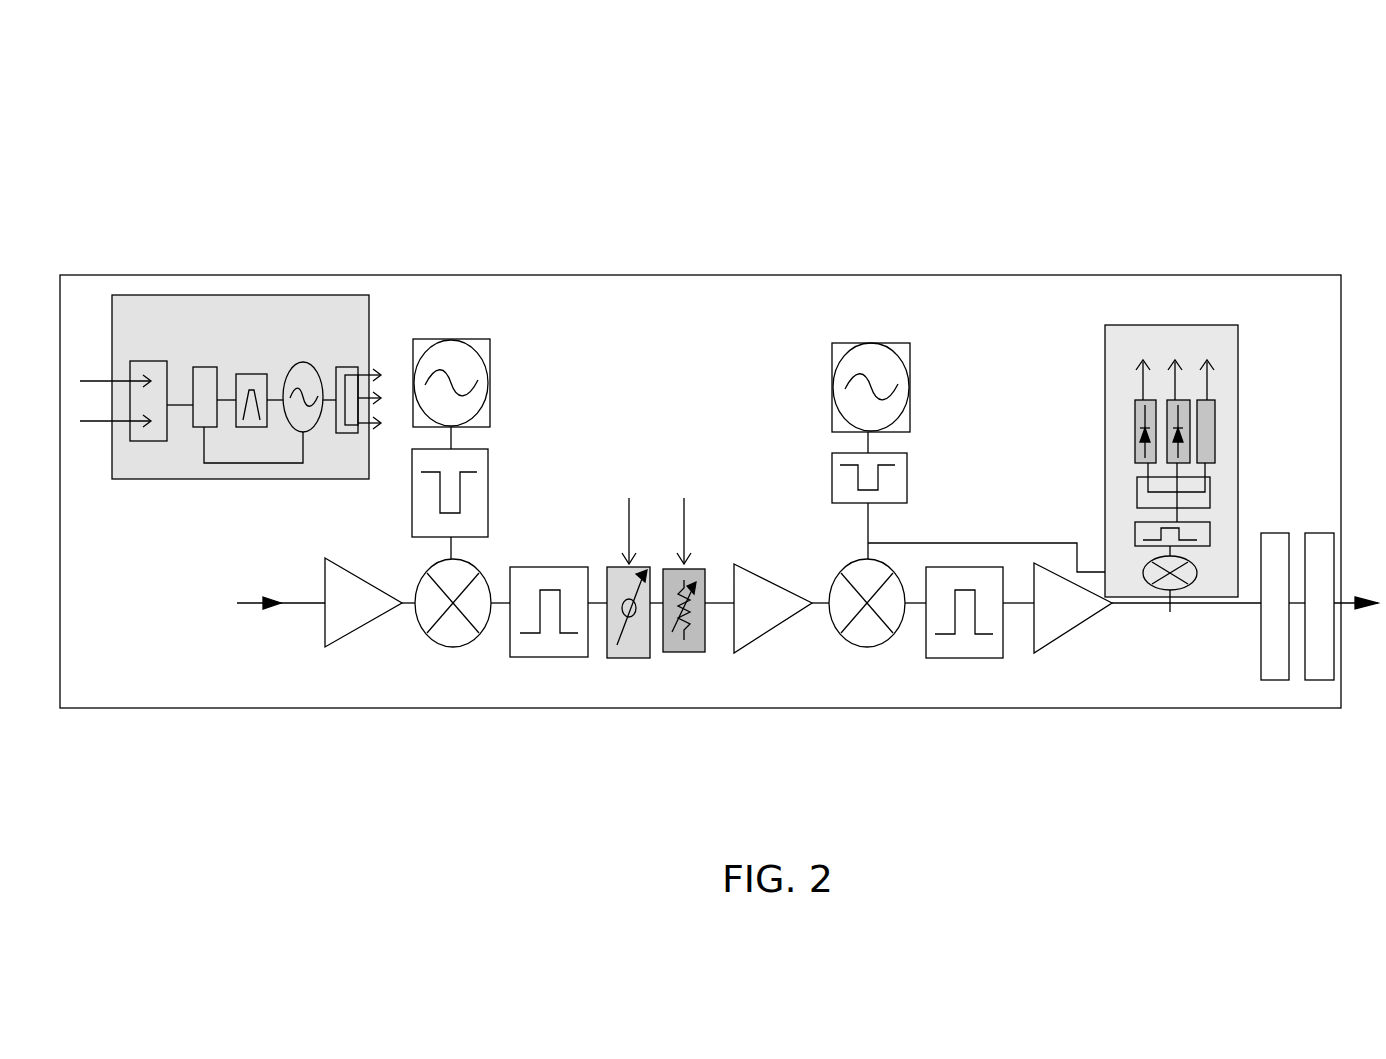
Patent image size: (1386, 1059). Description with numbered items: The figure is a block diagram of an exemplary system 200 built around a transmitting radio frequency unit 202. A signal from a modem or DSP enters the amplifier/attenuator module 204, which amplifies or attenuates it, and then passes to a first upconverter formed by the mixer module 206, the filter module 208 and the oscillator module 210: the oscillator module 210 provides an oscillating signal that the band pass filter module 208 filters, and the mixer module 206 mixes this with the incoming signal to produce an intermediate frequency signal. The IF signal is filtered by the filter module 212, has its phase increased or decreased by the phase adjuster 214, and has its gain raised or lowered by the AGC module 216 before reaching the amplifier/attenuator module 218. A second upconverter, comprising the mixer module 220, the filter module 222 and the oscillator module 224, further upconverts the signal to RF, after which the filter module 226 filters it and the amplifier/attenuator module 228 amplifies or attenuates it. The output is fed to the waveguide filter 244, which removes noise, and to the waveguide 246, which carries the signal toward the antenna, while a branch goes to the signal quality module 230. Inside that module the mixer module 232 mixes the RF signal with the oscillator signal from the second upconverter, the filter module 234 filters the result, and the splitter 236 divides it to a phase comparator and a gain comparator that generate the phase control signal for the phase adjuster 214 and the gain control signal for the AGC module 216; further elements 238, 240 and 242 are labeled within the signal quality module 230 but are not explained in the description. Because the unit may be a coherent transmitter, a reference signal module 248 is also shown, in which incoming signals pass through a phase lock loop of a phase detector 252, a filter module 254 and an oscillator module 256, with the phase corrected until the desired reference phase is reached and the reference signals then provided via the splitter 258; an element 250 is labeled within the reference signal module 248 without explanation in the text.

The system 200 is at (90, 132).
The transmitting radio frequency unit 202 is at (67, 275).
The amplifier/attenuator module 204 is at (342, 640).
The mixer module 206 is at (455, 648).
The filter module 208 is at (488, 525).
The oscillator module 210 is at (490, 413).
The filter module 212 is at (549, 657).
The phase adjuster 214 is at (631, 658).
The AGC module 216 is at (684, 652).
The amplifier/attenuator module 218 is at (755, 648).
The mixer module 220 is at (867, 648).
The filter module 222 is at (907, 487).
The oscillator module 224 is at (910, 413).
The filter module 226 is at (965, 658).
The amplifier/attenuator module 228 is at (1037, 650).
The signal quality module 230 is at (1213, 424).
The mixer module 232 is at (1203, 590).
The filter module 234 is at (1210, 537).
The splitter 236 is at (1210, 483).
The amplitude detector output AD 238 is at (1143, 325).
The phase detector output PD 240 is at (1175, 325).
The power detector output AP 242 is at (1207, 325).
The waveguide filter 244 is at (1270, 680).
The waveguide 246 is at (1325, 680).
The reference signal module 248 is at (369, 320).
The reference input block 250 is at (148, 361).
The phase detector 252 is at (212, 372).
The filter module 254 is at (260, 374).
The oscillator module 256 is at (320, 372).
The splitter 258 is at (356, 436).